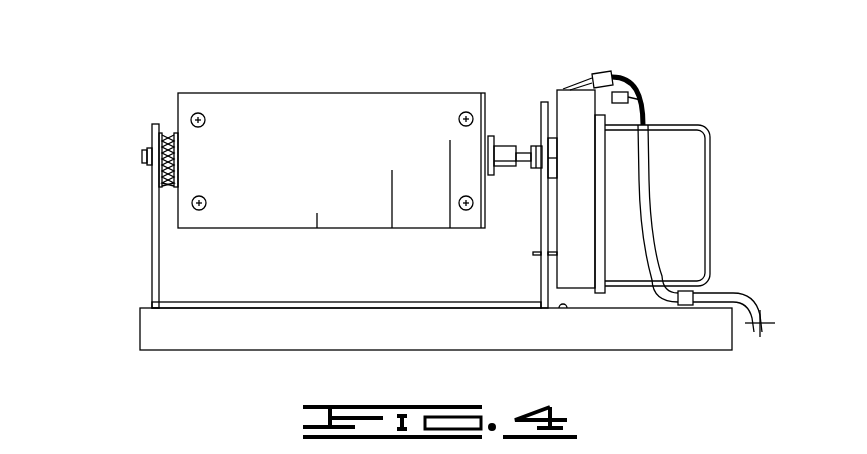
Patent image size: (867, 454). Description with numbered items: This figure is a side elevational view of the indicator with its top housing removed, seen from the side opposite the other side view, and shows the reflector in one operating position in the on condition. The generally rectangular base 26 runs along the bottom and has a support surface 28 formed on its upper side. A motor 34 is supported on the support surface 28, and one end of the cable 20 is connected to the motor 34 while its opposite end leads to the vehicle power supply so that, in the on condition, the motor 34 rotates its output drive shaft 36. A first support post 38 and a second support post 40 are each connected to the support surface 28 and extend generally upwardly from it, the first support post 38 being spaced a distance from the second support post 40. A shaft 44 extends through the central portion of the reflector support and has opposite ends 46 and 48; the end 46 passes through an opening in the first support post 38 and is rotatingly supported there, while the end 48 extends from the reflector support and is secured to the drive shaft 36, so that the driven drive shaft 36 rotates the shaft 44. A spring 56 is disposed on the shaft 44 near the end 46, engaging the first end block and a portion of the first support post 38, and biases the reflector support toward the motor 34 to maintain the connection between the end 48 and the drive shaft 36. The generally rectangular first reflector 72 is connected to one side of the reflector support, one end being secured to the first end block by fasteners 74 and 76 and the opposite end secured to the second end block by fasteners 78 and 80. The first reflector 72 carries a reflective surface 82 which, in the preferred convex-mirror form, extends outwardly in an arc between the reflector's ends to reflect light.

The cable 20 is at (733, 297).
The base 26 is at (662, 342).
The support surface 28 is at (567, 310).
The motor 34 is at (686, 137).
The drive shaft 36 is at (526, 165).
The first support post 38 is at (151, 200).
The second support post 40 is at (540, 242).
The shaft 44 is at (177, 133).
The end of shaft 46 is at (146, 149).
The end of shaft 48 is at (504, 146).
The spring 56 is at (172, 188).
The first reflector 72 is at (334, 218).
The fastener 74 is at (199, 113).
The fastener 76 is at (199, 211).
The fastener 78 is at (461, 113).
The fastener 80 is at (467, 211).
The reflective surface 82 is at (373, 213).